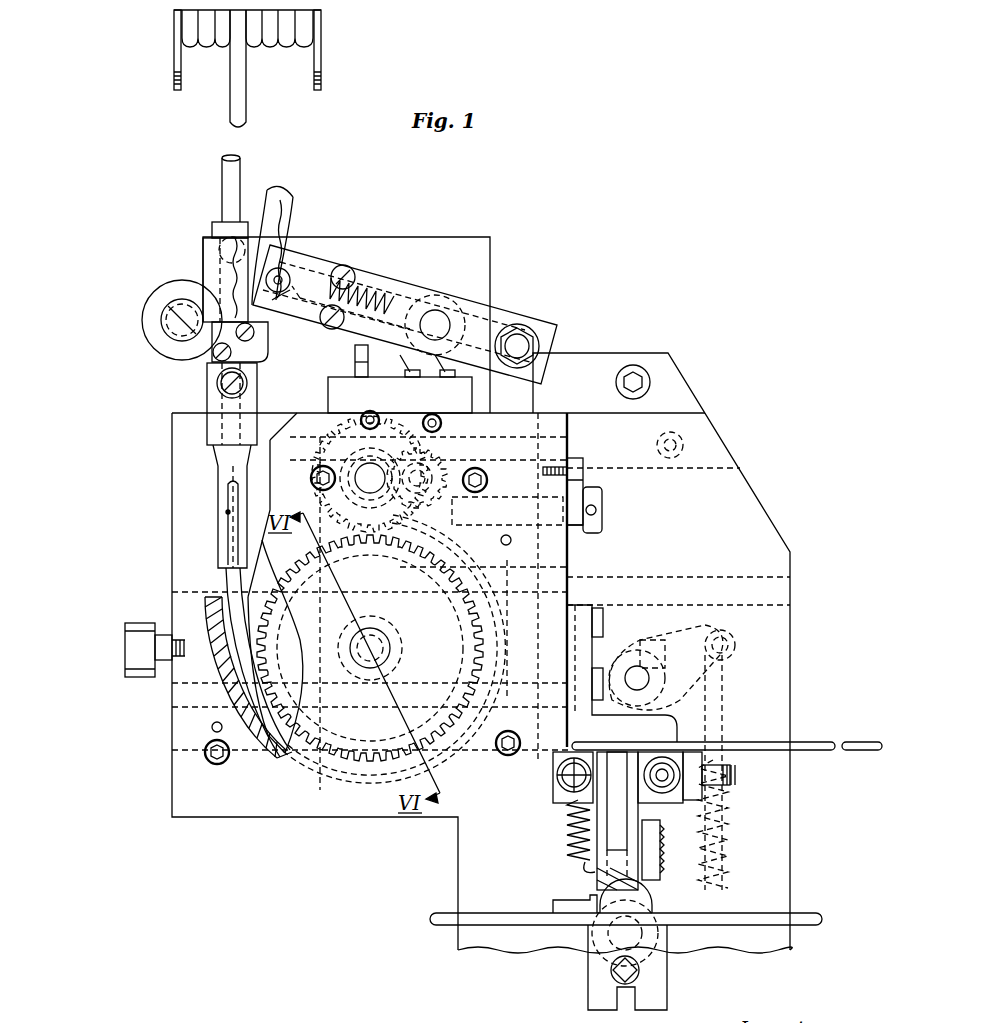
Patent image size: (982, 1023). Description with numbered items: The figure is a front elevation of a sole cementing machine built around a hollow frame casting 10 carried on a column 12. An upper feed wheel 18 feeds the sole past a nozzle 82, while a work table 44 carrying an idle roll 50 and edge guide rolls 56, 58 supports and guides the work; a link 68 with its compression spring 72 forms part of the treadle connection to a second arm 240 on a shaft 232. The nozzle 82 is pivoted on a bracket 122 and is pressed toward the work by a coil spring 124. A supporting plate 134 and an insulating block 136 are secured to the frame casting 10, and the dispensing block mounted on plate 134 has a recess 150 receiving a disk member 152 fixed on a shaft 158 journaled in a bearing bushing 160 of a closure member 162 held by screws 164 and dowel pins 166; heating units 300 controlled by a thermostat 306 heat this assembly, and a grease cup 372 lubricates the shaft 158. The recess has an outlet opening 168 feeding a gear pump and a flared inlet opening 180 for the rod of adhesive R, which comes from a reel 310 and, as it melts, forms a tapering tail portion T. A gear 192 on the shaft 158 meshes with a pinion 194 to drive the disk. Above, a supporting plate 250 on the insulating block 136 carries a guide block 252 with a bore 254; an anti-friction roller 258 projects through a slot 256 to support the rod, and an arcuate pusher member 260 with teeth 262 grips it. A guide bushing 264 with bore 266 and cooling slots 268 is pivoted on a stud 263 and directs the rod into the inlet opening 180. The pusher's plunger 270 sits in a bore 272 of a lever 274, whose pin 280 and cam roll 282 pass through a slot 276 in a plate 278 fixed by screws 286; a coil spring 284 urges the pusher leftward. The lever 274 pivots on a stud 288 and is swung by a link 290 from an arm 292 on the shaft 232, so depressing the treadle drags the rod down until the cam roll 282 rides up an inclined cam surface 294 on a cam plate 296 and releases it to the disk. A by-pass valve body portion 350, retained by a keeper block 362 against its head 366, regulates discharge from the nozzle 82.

The hollow frame casting 10 is at (792, 812).
The column 12 is at (458, 948).
The upper feed wheel 18 is at (660, 875).
The work table 44 is at (800, 915).
The idle roll 50 is at (667, 965).
The edge guide roll 56 is at (655, 905).
The edge guide roll 58 is at (553, 905).
The link 68 is at (722, 693).
The compression spring 72 is at (727, 853).
The nozzle 82 is at (575, 862).
The bracket 122 is at (680, 735).
The coil spring 124 is at (567, 825).
The supporting plate 134 is at (752, 487).
The insulating block 136 is at (668, 370).
The recess 150 is at (383, 795).
The disk member 152 is at (350, 783).
The shaft 158 is at (390, 650).
The bearing bushing 160 is at (388, 632).
The closure member 162 is at (283, 818).
The screws 164 is at (477, 466).
The dowel pins 166 is at (501, 540).
The outlet opening 168 is at (441, 500).
The inlet opening 180 is at (205, 597).
The gear 192 is at (467, 717).
The pinion 194 is at (320, 487).
The shaft 232 is at (628, 652).
The second arm 240 is at (697, 627).
The supporting plate 250 is at (372, 240).
The guide block 252 is at (212, 230).
The bore 254 is at (203, 262).
The slot 256 is at (172, 305).
The anti-friction roller 258 is at (152, 345).
The arcuate pusher member 260 is at (298, 212).
The teeth 262 is at (273, 215).
The stud 263 is at (207, 405).
The guide bushing 264 is at (218, 492).
The bore 266 is at (228, 512).
The slots 268 is at (228, 536).
The plunger 270 is at (343, 265).
The bore 272 is at (420, 300).
The lever 274 is at (527, 315).
The slot 276 is at (280, 292).
The plate 278 is at (380, 270).
The pin 280 is at (272, 300).
The cam roll 282 is at (305, 262).
The coil spring 284 is at (375, 290).
The screws 286 is at (332, 330).
The stud 288 is at (450, 318).
The link 290 is at (540, 404).
The arm 292 is at (600, 655).
The inclined cam surface 294 is at (262, 348).
The cam plate 296 is at (215, 356).
The electrical heating units 300 is at (555, 437).
The thermostat 306 is at (416, 404).
The reel 310 is at (321, 76).
The valve body portion 350 is at (490, 500).
The keeper block 362 is at (575, 448).
The head 366 is at (603, 512).
The grease cup 372 is at (136, 622).
The rod of adhesive R is at (232, 100).
The tapering tail portion T is at (217, 677).